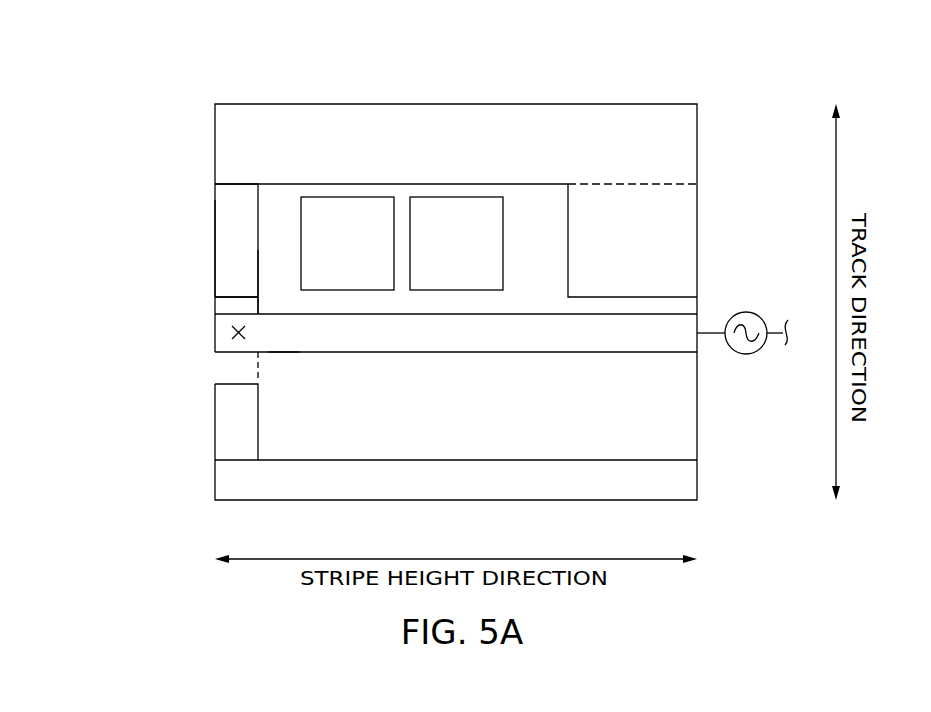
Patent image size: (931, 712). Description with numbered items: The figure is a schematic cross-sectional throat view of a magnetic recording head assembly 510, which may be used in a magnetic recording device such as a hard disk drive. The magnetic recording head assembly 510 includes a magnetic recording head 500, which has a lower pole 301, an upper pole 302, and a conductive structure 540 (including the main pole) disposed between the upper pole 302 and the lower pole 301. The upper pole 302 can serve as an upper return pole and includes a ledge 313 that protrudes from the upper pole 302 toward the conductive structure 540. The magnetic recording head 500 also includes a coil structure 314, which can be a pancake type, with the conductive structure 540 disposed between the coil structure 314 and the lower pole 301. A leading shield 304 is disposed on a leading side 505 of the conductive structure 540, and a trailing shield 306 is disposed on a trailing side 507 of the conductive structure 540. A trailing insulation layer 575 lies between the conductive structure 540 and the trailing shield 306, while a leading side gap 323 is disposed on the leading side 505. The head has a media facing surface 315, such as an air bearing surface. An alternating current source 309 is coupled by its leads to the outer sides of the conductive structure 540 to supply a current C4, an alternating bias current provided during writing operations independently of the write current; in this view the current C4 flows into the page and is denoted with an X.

The magnetic recording head assembly 510 is at (140, 62).
The magnetic recording head 500 is at (185, 148).
The upper pole 302 is at (541, 145).
The lower pole 301 is at (514, 491).
The trailing shield 306 is at (233, 218).
The media facing surface 315 is at (213, 248).
The trailing insulation layer 575 is at (219, 304).
The trailing side 507 is at (282, 310).
The coil structure 314 is at (328, 258).
The ledge 313 is at (584, 270).
The conductive structure 540 is at (511, 344).
The current C4 is at (232, 332).
The leading side gap 323 is at (237, 369).
The leading side 505 is at (283, 357).
The leading shield 304 is at (233, 434).
The alternating current source 309 is at (760, 348).